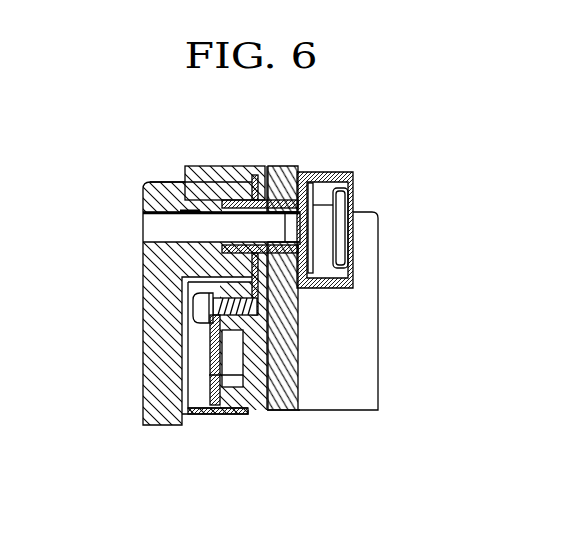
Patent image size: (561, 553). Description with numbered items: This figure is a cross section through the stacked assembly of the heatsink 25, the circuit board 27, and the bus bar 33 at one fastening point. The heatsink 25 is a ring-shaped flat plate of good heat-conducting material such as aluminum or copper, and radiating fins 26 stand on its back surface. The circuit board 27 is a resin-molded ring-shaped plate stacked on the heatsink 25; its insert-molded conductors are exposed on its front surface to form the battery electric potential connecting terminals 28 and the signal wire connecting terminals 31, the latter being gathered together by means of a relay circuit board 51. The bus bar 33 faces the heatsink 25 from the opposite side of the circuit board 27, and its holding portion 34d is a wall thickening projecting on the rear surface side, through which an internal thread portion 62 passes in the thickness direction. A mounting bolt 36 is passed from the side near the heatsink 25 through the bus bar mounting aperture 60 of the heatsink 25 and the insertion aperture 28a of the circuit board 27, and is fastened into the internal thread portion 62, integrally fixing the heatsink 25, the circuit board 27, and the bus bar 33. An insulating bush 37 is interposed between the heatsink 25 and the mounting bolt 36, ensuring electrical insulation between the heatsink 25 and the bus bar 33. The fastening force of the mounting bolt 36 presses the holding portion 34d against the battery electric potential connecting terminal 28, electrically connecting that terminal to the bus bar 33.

The heatsink 25 is at (299, 413).
The radiating fins 26 is at (363, 327).
The circuit board 27 is at (250, 414).
The battery electric potential connecting terminals 28 is at (252, 166).
The insertion apertures 28a is at (237, 201).
The signal wire connecting terminals 31 is at (208, 375).
The bus bar 33 is at (142, 283).
The holding portion 34d is at (143, 184).
The mounting bolts 36 is at (343, 227).
The insulating bushes 37 is at (343, 172).
The relay circuit board 51 is at (208, 343).
The bus bar mounting apertures 60 is at (283, 200).
The internal thread portions 62 is at (185, 210).